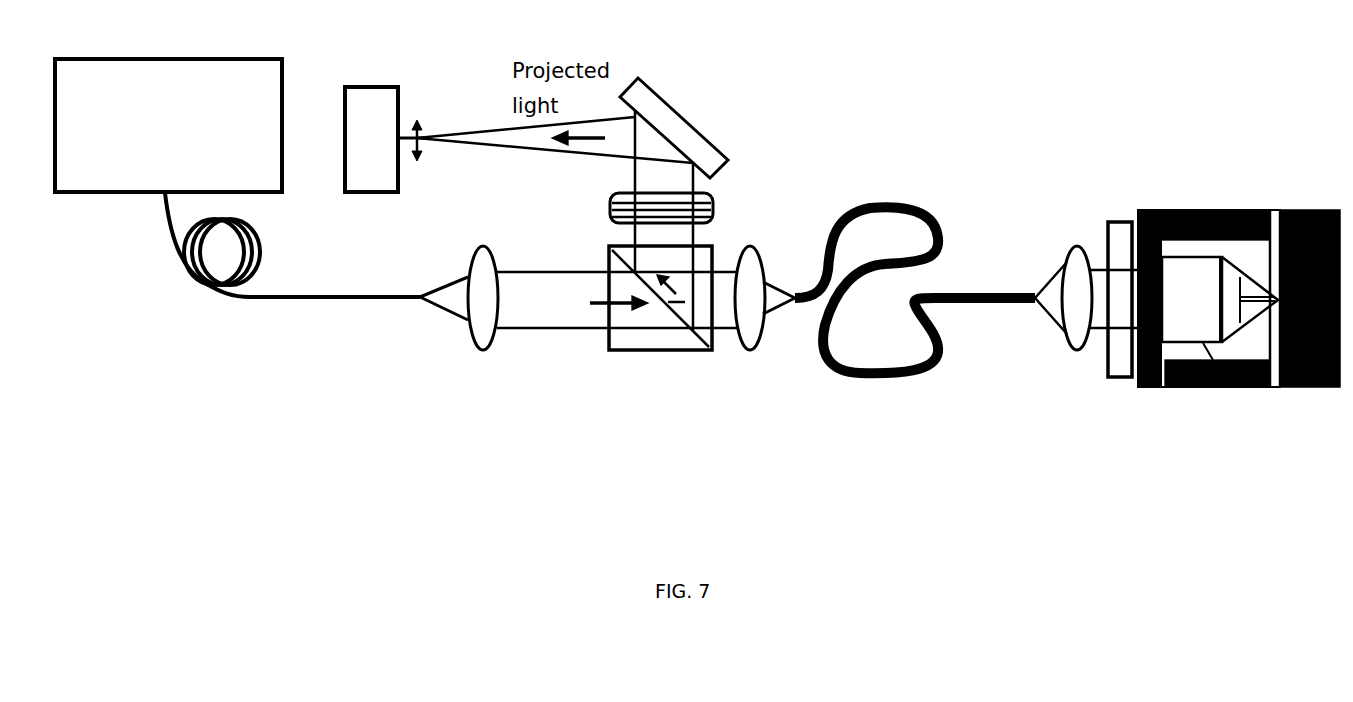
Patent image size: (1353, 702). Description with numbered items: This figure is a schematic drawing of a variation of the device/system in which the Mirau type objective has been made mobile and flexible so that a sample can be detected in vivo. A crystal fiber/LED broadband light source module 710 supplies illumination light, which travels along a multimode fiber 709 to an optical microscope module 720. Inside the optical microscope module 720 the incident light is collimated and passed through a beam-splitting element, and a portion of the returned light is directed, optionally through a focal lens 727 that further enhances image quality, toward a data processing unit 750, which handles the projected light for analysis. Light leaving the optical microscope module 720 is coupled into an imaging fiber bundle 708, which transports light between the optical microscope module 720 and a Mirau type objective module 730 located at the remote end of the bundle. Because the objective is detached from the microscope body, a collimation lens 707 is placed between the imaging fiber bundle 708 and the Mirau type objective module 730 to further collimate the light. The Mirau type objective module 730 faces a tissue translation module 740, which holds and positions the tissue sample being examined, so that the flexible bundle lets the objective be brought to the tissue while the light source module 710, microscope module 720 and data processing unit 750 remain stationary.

The crystal fiber/LED broadband light source module 710 is at (168, 125).
The multimode fiber 709 is at (280, 297).
The data processing unit 750 is at (368, 100).
The focal lens 727 is at (712, 195).
The optical microscope module 720 is at (658, 357).
The collimation lens 707 is at (750, 352).
The imaging fiber bundle 708 is at (895, 380).
The Mirau type objective module 730 is at (1235, 384).
The tissue translation module 740 is at (1298, 212).